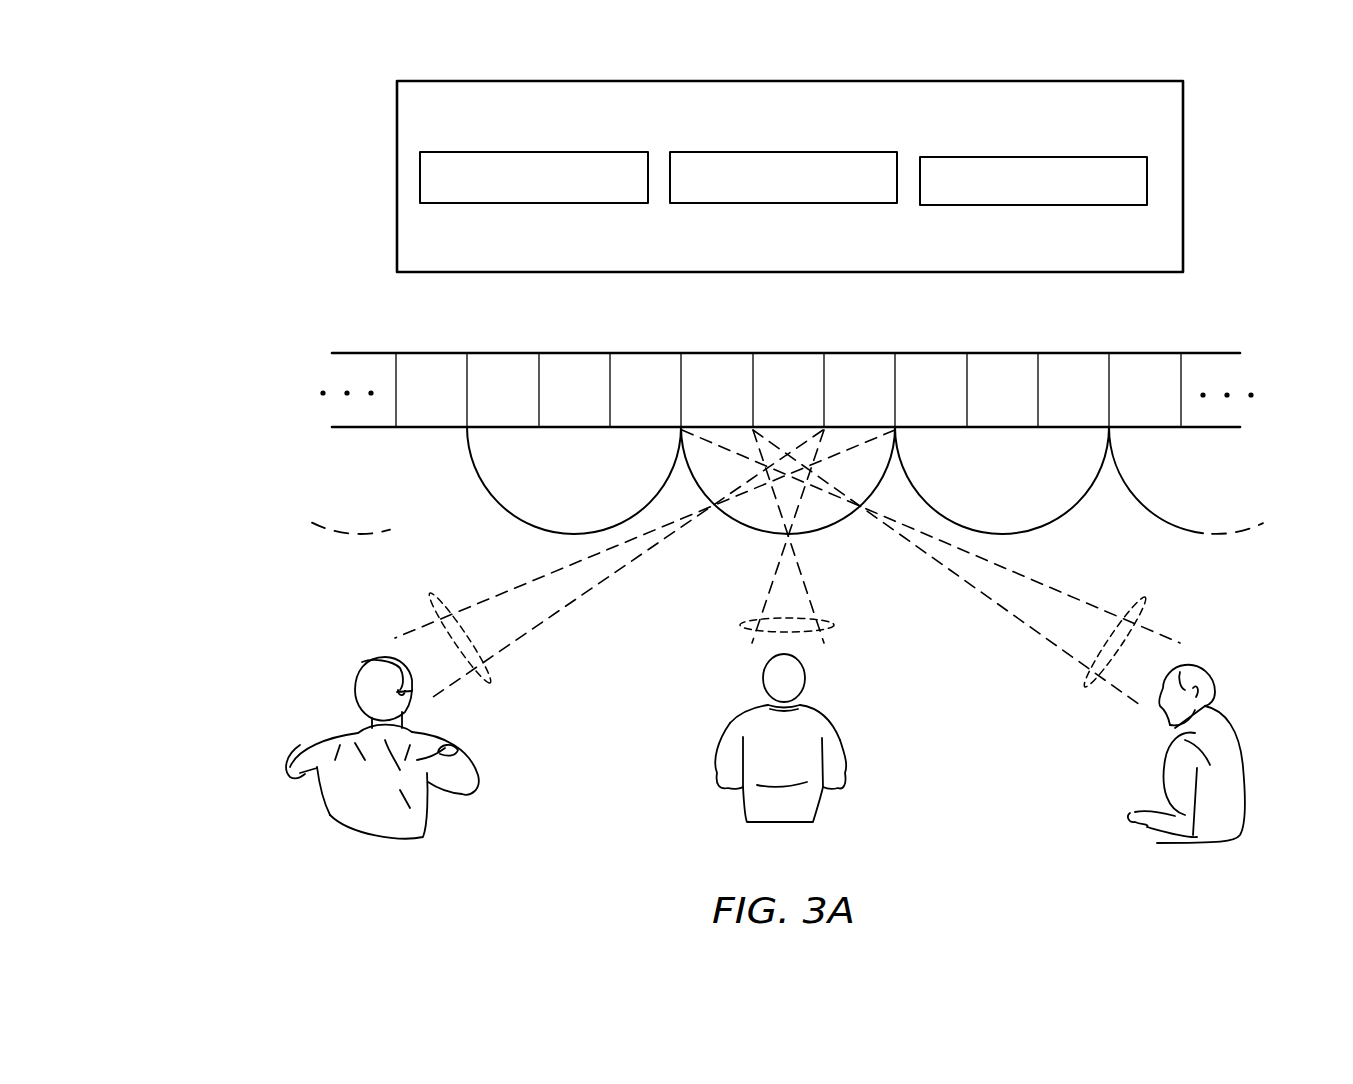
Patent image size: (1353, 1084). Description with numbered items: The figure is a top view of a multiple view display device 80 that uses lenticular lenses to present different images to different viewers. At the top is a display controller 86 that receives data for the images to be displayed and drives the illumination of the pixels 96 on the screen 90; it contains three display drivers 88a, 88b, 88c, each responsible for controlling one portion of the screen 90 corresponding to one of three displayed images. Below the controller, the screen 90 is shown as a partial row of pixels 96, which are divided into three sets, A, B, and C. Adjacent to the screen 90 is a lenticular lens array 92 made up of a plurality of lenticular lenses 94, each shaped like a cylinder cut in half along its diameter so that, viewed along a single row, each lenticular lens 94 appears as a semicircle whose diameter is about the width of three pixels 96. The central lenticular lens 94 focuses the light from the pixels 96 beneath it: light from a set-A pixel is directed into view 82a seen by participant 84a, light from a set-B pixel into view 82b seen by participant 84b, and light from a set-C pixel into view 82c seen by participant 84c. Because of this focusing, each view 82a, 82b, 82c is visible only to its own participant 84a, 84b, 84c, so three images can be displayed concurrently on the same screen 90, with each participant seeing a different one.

The multiple view display device 80 is at (222, 172).
The display controller 86 is at (390, 165).
The display driver 88a is at (533, 203).
The display driver 88b is at (785, 203).
The display driver 88c is at (1030, 205).
The screen 90 is at (280, 377).
The lenticular lens array 92 is at (255, 474).
The lenticular lens 94 is at (842, 523).
The pixels 96 is at (575, 355).
The view 82a is at (487, 677).
The view 82b is at (743, 622).
The view 82c is at (1090, 683).
The participant 84a is at (302, 797).
The participant 84b is at (847, 775).
The participant 84c is at (1247, 800).